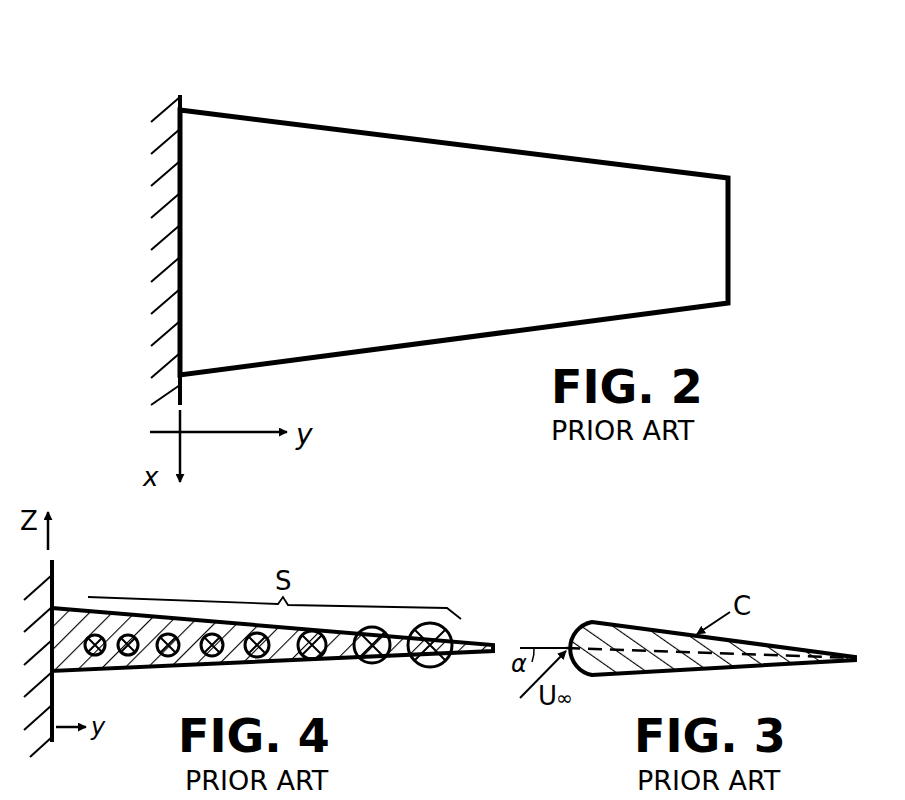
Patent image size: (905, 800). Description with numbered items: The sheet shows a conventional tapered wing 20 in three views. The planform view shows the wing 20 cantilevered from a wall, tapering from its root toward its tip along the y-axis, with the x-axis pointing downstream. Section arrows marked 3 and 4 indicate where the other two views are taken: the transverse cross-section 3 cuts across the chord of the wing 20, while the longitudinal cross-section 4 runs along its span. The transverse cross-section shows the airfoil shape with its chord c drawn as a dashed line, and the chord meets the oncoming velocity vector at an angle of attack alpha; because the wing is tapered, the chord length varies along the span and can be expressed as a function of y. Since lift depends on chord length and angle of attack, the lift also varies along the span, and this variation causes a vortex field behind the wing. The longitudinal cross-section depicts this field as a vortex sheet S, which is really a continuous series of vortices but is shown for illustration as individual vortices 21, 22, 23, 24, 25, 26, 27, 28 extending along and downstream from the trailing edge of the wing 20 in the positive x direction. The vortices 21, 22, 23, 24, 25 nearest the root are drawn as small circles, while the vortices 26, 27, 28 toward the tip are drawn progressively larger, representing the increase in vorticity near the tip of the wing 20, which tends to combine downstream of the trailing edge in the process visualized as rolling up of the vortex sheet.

In FIG. 2, the tapered wing 20 is at (225, 138).
In FIG. 4, the tapered wing 20 is at (64, 609).
In FIG. 3, the tapered wing 20 is at (605, 626).
In FIG. 2, the section line 3- 3 is at (417, 100).
In FIG. 2, the section line 4- 4 is at (105, 266).
In FIG. 4, the vortex 21 is at (100, 668).
In FIG. 4, the vortex 22 is at (133, 667).
In FIG. 4, the vortex 23 is at (175, 665).
In FIG. 4, the vortex 24 is at (212, 664).
In FIG. 4, the vortex 25 is at (260, 662).
In FIG. 4, the vortex 26 is at (310, 660).
In FIG. 4, the vortex 27 is at (365, 663).
In FIG. 4, the vortex 28 is at (425, 667).